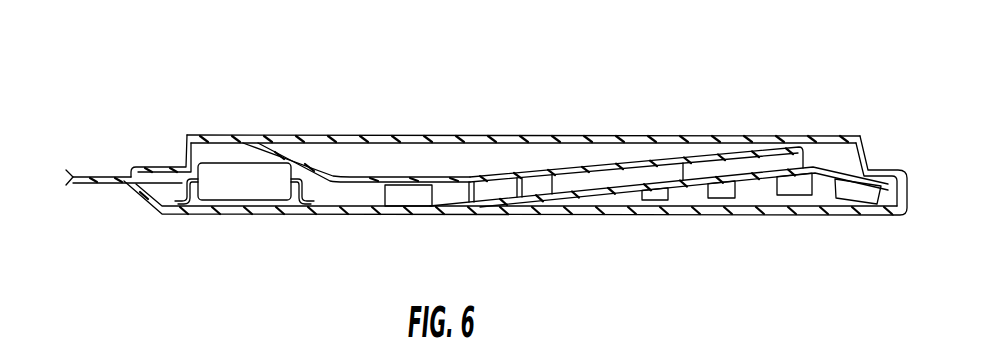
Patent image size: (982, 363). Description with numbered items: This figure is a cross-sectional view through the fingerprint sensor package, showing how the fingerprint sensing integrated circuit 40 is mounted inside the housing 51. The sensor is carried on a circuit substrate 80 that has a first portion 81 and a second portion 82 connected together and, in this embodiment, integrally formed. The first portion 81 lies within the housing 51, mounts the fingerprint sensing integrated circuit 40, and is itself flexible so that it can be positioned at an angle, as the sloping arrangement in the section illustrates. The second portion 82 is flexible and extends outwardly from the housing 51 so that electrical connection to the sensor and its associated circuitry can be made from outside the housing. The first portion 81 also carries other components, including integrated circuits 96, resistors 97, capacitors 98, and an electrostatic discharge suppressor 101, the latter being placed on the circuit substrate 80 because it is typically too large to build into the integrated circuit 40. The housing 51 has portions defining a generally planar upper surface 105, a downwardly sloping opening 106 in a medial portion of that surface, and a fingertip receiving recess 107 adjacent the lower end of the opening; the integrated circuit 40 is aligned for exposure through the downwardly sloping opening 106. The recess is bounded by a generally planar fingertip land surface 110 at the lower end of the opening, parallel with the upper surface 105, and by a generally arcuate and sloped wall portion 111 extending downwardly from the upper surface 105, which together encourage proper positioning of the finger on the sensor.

The housing 51 is at (232, 136).
The arcuate and sloped wall portion 111 is at (322, 137).
The fingertip receiving recess 107 is at (412, 153).
The downwardly sloping opening 106 is at (573, 168).
The fingerprint sensing integrated circuit 40 is at (605, 161).
The generally planar upper surface 105 is at (817, 137).
The second portion of the circuit substrate 82 is at (86, 185).
The integrated circuits 96 is at (265, 215).
The fingertip land surface 110 is at (368, 178).
The resistors 97 is at (417, 196).
The capacitors 98 is at (503, 188).
The circuit substrate 80 is at (620, 191).
The first portion of the circuit substrate 81 is at (757, 178).
The electrostatic discharge suppressor 101 is at (797, 185).